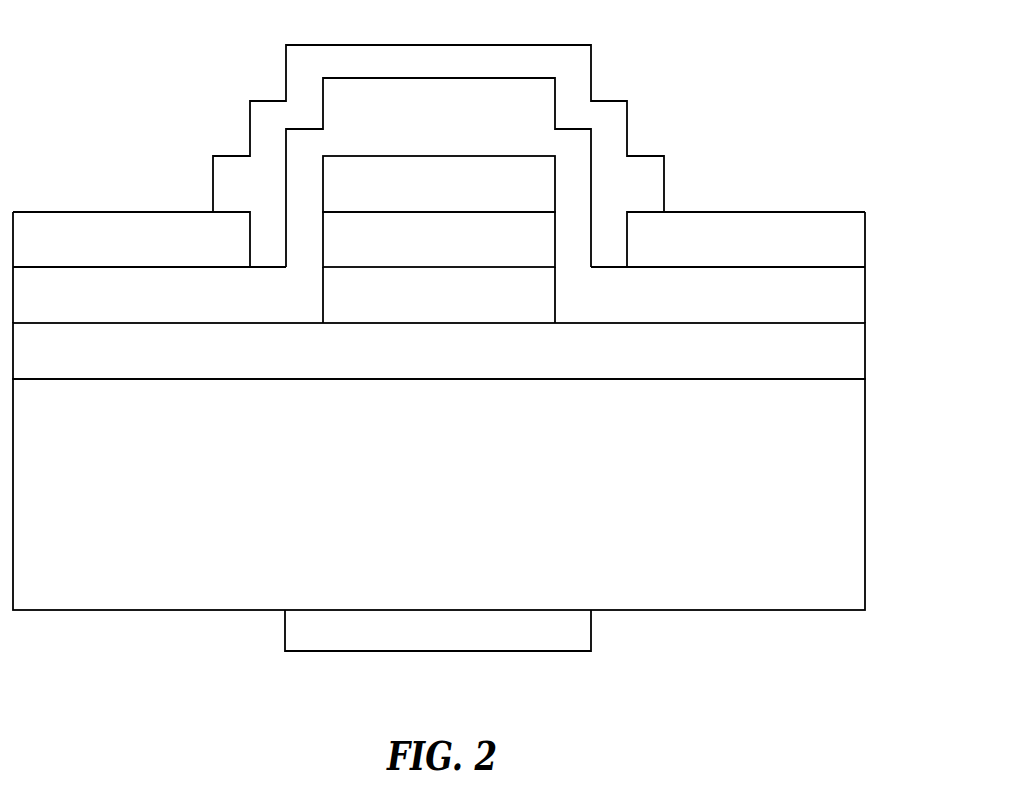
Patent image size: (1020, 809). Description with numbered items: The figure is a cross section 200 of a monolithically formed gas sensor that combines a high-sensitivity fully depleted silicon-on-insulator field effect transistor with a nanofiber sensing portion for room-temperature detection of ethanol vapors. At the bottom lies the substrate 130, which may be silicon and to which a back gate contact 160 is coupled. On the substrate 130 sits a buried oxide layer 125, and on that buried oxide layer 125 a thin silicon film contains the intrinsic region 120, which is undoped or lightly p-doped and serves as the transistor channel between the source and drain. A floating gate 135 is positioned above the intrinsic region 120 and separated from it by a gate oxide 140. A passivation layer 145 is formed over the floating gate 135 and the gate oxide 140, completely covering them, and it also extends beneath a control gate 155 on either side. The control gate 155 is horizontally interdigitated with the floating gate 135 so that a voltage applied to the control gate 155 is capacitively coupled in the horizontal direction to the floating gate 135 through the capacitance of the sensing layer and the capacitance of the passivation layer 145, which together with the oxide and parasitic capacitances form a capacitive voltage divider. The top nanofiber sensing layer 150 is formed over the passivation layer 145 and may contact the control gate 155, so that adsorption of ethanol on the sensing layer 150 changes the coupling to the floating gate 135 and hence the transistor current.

The cross section of the gas sensor 200 is at (110, 36).
The intrinsic region 120 is at (542, 300).
The buried oxide layer 125 is at (851, 356).
The substrate 130 is at (851, 484).
The floating gate 135 is at (487, 155).
The gate oxide 140 is at (527, 227).
The passivation layer 145 is at (851, 299).
The nanofiber sensing layer 150 is at (440, 45).
The control gate 155 is at (130, 210).
The back gate contact 160 is at (578, 633).